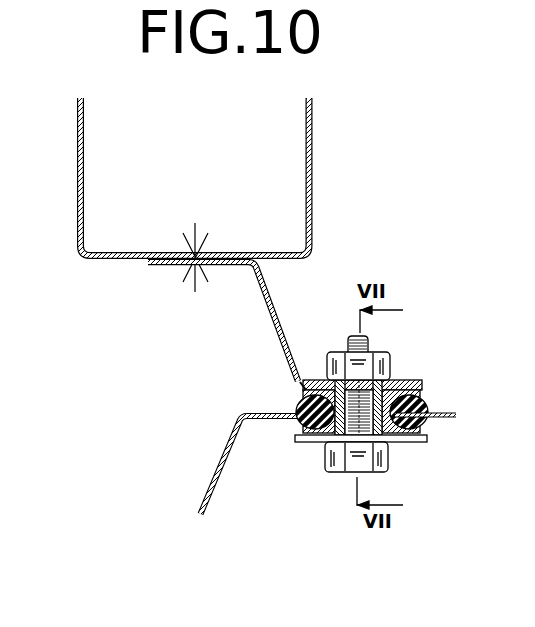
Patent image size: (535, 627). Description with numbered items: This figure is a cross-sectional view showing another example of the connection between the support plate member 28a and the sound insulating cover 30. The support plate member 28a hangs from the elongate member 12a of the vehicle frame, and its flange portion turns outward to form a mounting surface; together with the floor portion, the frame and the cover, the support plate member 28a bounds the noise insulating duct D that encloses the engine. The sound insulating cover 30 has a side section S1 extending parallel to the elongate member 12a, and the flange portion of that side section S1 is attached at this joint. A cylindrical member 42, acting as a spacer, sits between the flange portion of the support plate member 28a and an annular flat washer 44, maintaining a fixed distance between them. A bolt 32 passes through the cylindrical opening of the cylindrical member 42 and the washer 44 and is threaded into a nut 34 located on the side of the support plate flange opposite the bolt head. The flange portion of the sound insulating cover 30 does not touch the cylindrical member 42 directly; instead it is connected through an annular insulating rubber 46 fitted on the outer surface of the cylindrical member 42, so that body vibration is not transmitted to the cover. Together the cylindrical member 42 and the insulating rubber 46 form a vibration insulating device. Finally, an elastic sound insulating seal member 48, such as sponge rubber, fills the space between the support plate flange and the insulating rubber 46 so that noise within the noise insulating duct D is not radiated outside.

The elongate member 12a is at (313, 150).
The support plate member 28a is at (276, 318).
The noise insulating duct D is at (243, 309).
The sound insulating cover 30 is at (210, 500).
The side section S1 is at (245, 420).
The cylindrical member 42 is at (378, 396).
The insulating rubber 46 is at (430, 406).
The sound insulating seal member 48 is at (300, 390).
The nut 34 is at (381, 354).
The washer 44 is at (427, 441).
The bolt 32 is at (385, 458).